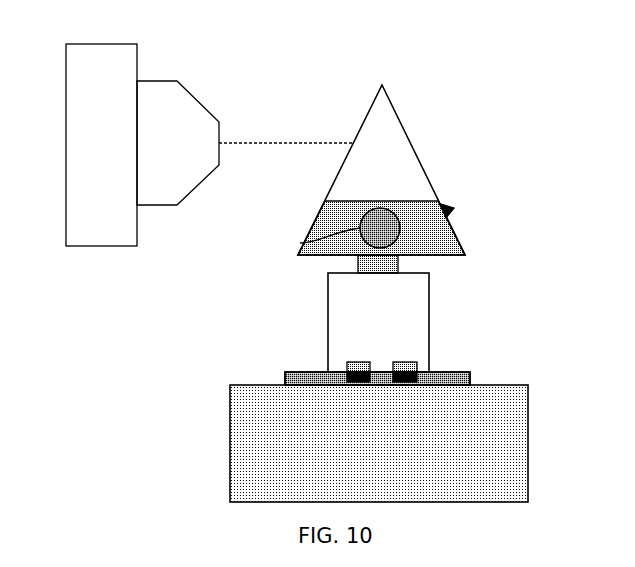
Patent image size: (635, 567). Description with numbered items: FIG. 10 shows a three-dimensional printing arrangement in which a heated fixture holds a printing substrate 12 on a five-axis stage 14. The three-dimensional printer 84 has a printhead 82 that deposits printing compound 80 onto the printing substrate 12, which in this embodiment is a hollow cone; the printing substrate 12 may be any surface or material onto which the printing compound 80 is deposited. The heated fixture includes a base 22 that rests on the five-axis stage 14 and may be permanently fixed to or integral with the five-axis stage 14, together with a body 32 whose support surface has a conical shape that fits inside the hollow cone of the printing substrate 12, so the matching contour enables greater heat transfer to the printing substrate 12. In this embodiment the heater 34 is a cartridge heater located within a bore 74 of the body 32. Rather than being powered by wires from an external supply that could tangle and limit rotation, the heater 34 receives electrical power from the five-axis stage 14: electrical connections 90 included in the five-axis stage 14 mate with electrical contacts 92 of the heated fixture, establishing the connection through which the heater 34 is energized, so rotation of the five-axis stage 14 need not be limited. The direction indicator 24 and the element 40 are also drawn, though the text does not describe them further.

The printing substrate 12 is at (378, 163).
The 5-axis stage 14 is at (475, 475).
The base 22 is at (412, 322).
The arrow / direction 24 is at (449, 208).
The body 32 is at (330, 212).
The heater 34 is at (300, 243).
The plate 40 is at (472, 373).
The bore 74 is at (400, 228).
The printing compound 80 is at (278, 143).
The printhead 82 is at (188, 198).
The 3D printer 84 is at (118, 247).
The electrical connections 90 is at (305, 371).
The electrical contacts 92 is at (345, 363).